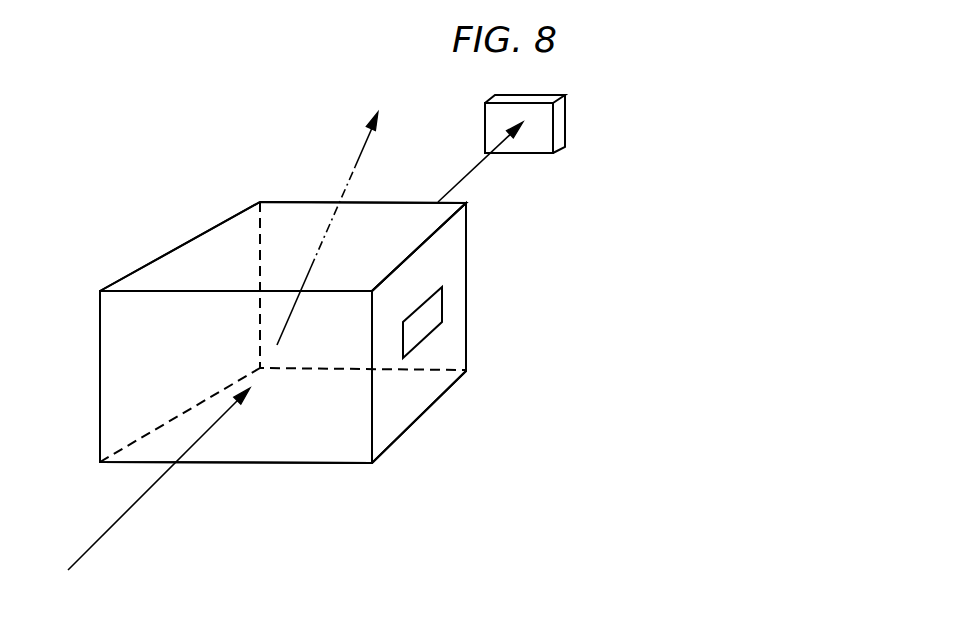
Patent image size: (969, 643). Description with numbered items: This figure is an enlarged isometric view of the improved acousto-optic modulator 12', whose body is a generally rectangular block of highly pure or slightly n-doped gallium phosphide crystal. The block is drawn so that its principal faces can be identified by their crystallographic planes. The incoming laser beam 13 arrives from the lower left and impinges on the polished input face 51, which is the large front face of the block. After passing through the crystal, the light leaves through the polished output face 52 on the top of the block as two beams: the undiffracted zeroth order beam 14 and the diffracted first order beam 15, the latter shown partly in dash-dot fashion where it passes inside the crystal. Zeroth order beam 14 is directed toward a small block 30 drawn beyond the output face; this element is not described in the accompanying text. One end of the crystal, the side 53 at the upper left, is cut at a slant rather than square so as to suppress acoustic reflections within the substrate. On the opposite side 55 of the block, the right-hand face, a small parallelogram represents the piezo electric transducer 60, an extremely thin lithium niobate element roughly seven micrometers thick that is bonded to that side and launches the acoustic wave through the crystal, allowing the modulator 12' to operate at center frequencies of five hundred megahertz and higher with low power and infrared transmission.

The modulator 12' is at (271, 307).
The laser beam 13 is at (112, 525).
The zeroth order beam 14 is at (468, 173).
The first order beam 15 is at (352, 172).
The detector block 30 is at (565, 117).
The input face 51 is at (255, 444).
The output face 52 is at (466, 228).
The side 53 is at (128, 275).
The side 55 is at (392, 425).
The piezo electric transducer 60 is at (432, 316).